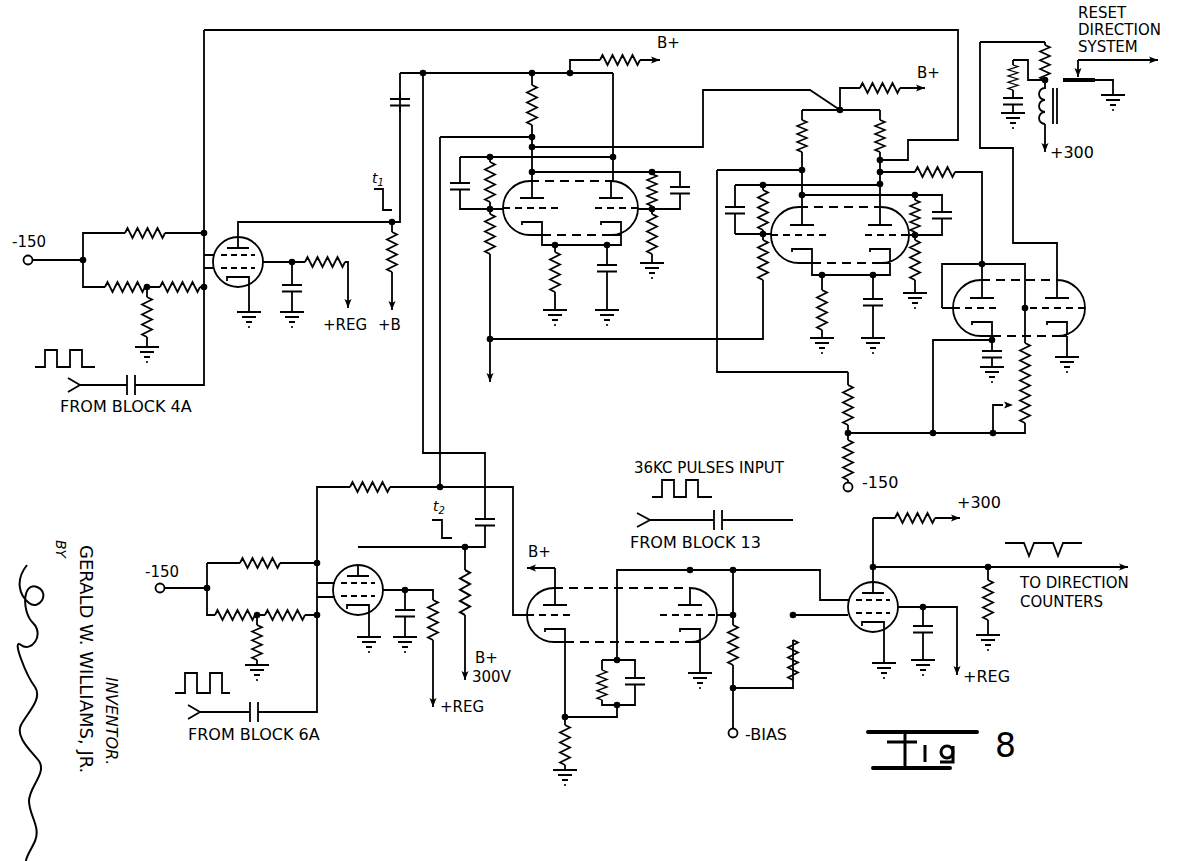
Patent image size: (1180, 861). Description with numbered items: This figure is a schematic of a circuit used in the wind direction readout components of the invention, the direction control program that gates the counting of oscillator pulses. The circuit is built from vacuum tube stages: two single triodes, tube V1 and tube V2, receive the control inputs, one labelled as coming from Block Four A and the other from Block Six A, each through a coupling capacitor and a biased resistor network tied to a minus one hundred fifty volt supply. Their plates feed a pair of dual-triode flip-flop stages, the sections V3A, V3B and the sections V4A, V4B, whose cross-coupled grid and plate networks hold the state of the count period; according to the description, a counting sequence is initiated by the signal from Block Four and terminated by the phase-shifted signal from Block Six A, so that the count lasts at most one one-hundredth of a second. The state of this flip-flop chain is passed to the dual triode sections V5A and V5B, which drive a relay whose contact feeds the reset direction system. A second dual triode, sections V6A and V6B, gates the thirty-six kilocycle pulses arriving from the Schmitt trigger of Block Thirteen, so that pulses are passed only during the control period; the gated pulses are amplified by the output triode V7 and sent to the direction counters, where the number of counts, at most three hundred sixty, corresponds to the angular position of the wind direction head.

The triode tube V1 (input gate) V1 is at (250, 257).
The triode tube V2 (input gate) V2 is at (370, 586).
The dual triode V3 section A (flip-flop) V3A is at (532, 221).
The dual triode V3 section B (flip-flop) V3B is at (624, 192).
The dual triode V4 section A (flip-flop) V4A is at (799, 247).
The dual triode V4 section B (flip-flop) V4B is at (911, 235).
The dual triode V5 section A (relay driver) V5A is at (953, 309).
The dual triode V5 section B (relay driver) V5B is at (1077, 309).
The dual triode V6 section A (pulse gate) V6A is at (561, 600).
The dual triode V6 section B (pulse gate) V6B is at (692, 609).
The triode tube V7 (output amplifier) V7 is at (885, 603).